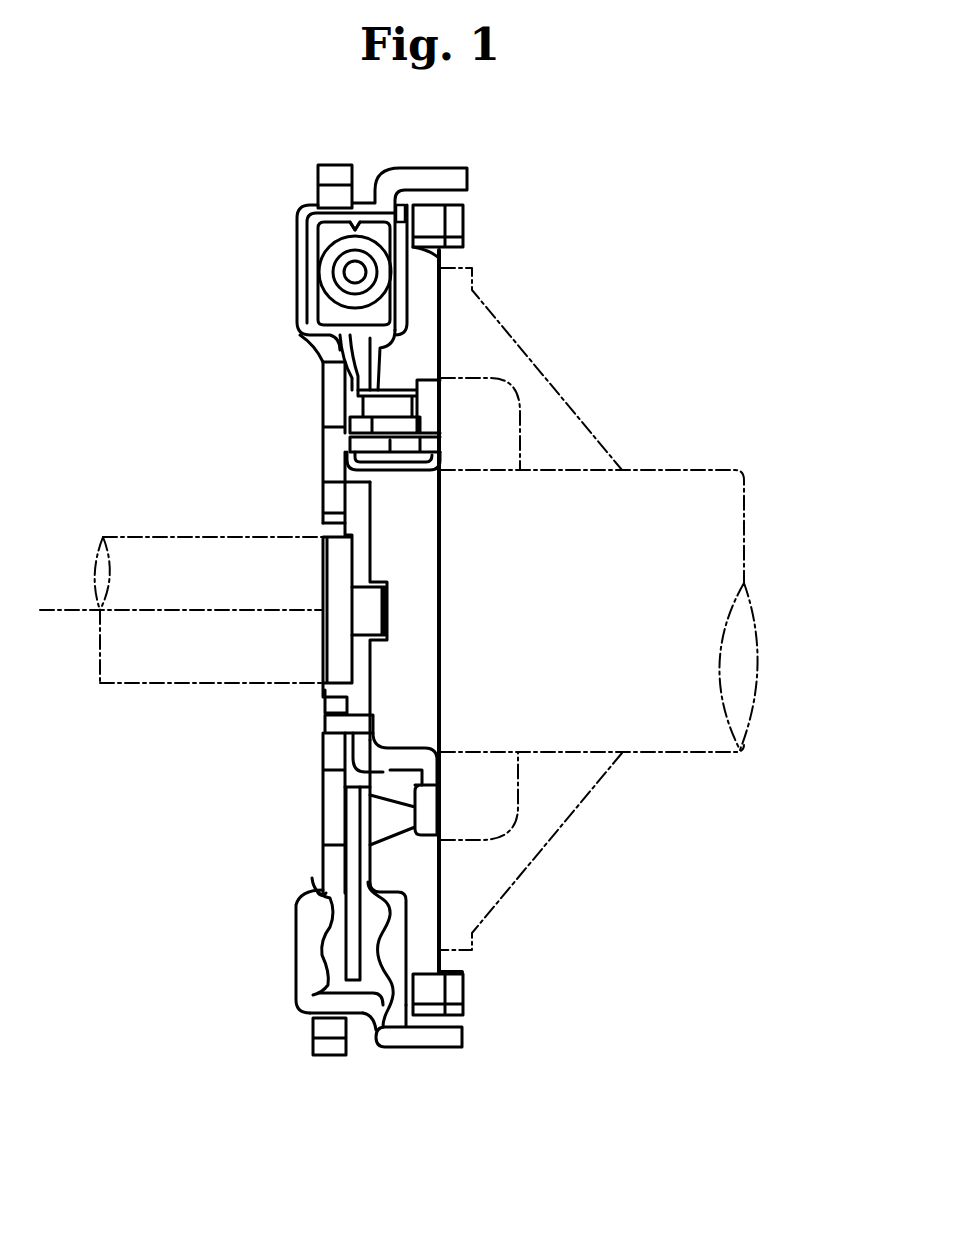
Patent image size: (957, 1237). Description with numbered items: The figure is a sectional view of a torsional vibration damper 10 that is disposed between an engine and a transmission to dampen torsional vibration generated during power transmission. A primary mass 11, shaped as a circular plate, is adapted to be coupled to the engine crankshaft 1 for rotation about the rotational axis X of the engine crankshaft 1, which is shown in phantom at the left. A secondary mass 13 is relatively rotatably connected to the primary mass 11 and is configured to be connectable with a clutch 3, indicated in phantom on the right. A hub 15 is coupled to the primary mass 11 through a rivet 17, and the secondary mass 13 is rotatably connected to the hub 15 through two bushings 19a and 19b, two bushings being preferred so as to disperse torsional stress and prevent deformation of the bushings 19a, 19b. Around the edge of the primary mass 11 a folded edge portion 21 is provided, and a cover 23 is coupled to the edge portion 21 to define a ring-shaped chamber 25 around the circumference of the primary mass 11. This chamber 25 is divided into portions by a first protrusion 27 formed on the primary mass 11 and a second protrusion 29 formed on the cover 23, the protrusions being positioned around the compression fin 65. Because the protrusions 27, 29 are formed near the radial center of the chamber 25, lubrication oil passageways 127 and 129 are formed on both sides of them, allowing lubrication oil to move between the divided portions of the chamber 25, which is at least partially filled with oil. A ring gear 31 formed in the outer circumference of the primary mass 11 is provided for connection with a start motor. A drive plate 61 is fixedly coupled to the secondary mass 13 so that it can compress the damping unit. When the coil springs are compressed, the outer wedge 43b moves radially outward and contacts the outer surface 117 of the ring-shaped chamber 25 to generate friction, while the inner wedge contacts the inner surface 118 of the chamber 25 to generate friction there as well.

The engine crankshaft 1 is at (170, 686).
The rotational axis X is at (67, 614).
The clutch 3 is at (577, 803).
The torsional vibration damper 10 is at (180, 408).
The primary mass 11 is at (297, 278).
The secondary mass 13 is at (441, 320).
The hub 15 is at (323, 530).
The rivet 17 is at (325, 725).
The bushing 19a is at (422, 445).
The bushing 19b is at (348, 452).
The folded edge portion 21 is at (437, 170).
The cover 23 is at (442, 259).
The ring-shaped chamber 25 is at (325, 986).
The first protrusion 27 is at (320, 938).
The second protrusion 29 is at (387, 937).
The ring gear 31 is at (318, 196).
The outer wedge 43b is at (330, 234).
The drive plate 61 is at (323, 362).
The compression fin 65 is at (352, 982).
The outer surface 117 is at (356, 228).
The inner surface 118 is at (305, 334).
The lubrication oil passageway 127 is at (327, 893).
The lubrication oil passageway 129 is at (318, 1000).